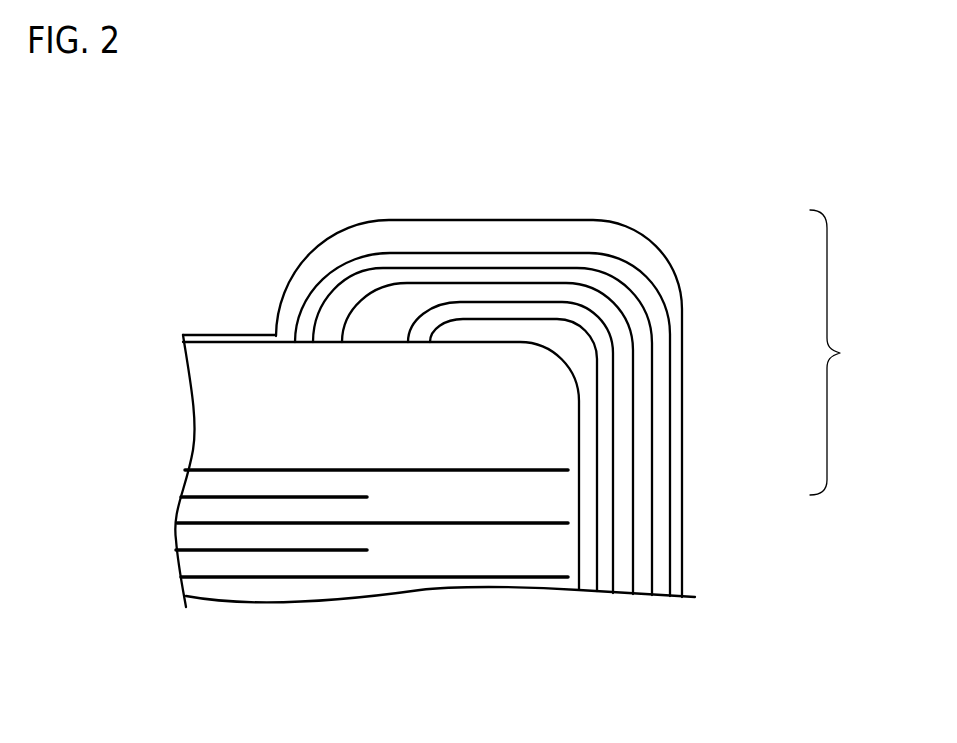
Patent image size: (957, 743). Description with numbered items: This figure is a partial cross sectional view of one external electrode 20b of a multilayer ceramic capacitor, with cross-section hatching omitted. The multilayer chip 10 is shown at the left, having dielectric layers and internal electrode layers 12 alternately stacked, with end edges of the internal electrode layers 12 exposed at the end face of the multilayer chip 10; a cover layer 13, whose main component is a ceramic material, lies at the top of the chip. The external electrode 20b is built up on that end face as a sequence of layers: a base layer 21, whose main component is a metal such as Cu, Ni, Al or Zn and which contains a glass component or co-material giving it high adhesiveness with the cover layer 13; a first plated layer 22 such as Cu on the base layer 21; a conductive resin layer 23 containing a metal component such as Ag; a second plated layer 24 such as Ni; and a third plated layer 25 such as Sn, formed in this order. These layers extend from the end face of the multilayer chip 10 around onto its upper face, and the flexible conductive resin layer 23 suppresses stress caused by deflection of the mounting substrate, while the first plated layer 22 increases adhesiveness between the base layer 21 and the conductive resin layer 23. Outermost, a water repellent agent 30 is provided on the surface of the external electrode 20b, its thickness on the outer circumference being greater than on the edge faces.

The multilayer chip 10 is at (203, 333).
The internal electrode layers 12 is at (427, 578).
The cover layer 13 is at (265, 383).
The external electrode 20b is at (854, 352).
The base layer 21 is at (588, 490).
The first plated layer 22 is at (605, 428).
The conductive resin layer 23 is at (625, 373).
The second plated layer 24 is at (637, 323).
The third plated layer 25 is at (632, 287).
The water repellent agent 30 is at (457, 231).